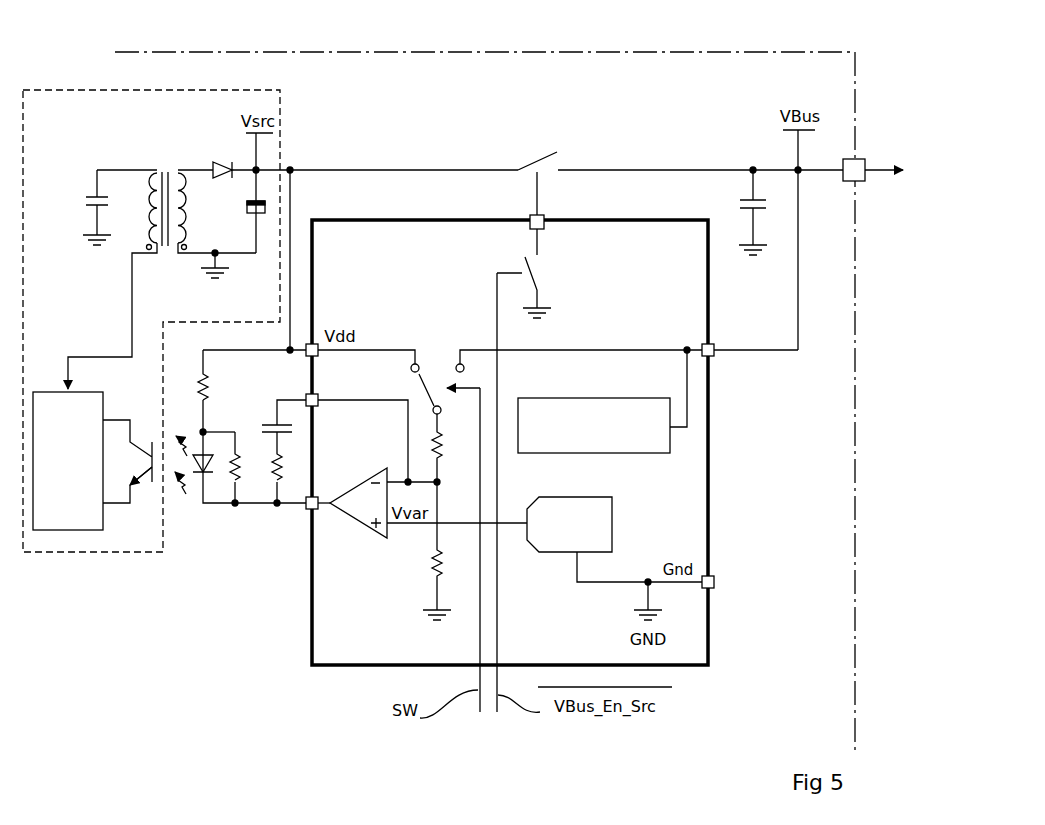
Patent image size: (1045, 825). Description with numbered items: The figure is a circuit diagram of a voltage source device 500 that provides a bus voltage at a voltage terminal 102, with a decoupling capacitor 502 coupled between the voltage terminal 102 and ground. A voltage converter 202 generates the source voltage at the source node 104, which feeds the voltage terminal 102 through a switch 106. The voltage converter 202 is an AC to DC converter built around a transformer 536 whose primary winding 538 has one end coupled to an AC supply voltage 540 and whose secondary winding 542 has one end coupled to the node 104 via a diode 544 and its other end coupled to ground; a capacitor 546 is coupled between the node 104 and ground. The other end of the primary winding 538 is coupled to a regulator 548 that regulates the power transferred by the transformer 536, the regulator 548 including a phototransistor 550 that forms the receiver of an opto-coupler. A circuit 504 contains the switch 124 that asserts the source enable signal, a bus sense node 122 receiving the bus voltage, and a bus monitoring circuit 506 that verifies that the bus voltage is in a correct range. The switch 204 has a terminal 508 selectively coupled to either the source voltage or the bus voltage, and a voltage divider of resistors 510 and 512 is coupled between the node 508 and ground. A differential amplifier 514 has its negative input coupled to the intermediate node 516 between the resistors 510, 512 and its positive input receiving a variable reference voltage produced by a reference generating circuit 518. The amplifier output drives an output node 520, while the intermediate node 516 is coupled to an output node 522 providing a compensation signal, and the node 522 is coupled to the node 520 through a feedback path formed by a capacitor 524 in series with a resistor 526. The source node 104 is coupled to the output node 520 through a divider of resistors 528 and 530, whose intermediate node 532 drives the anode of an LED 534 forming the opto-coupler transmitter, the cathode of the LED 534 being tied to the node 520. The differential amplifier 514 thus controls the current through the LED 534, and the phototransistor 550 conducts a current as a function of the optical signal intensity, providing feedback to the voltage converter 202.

The voltage source device 500 is at (712, 72).
The voltage terminal 102 is at (862, 182).
The Vsrc node 104 is at (292, 168).
The VBus switch 106 is at (540, 152).
The VBus_sense node 122 is at (715, 357).
The switch 124 is at (538, 270).
The voltage converter 202 is at (105, 540).
The switch 204 is at (436, 358).
The decoupling capacitor 502 is at (763, 212).
The circuit 504 is at (709, 468).
The VBus monitoring circuit 506 is at (588, 455).
The terminal 508 is at (440, 408).
The resistor 510 is at (441, 441).
The resistor 512 is at (432, 572).
The differential amplifier 514 is at (348, 508).
The intermediate node 516 is at (440, 485).
The Vvar generating circuit 518 is at (612, 523).
The output node 520 is at (306, 510).
The output node 522 is at (318, 406).
The capacitor 524 is at (293, 430).
The resistor 526 is at (292, 468).
The resistor 528 is at (212, 390).
The resistor 530 is at (239, 461).
The intermediate node 532 is at (206, 431).
The LED 534 is at (218, 475).
The transformer 536 is at (179, 185).
The primary winding 538 is at (148, 220).
The AC supply voltage 540 is at (92, 196).
The secondary winding 542 is at (186, 212).
The diode 544 is at (224, 176).
The capacitor 546 is at (270, 205).
The regulator 548 is at (97, 392).
The phototransistor 550 is at (140, 455).